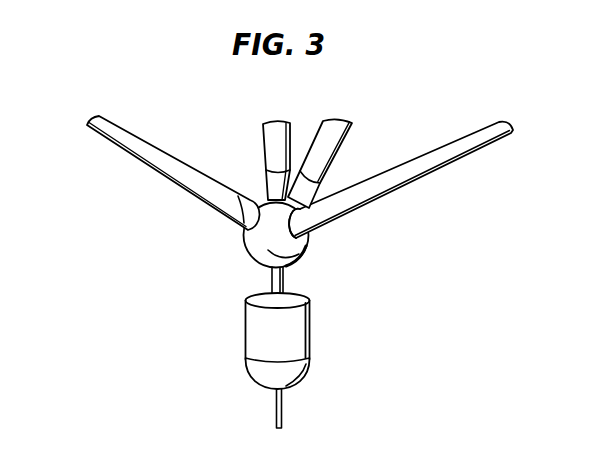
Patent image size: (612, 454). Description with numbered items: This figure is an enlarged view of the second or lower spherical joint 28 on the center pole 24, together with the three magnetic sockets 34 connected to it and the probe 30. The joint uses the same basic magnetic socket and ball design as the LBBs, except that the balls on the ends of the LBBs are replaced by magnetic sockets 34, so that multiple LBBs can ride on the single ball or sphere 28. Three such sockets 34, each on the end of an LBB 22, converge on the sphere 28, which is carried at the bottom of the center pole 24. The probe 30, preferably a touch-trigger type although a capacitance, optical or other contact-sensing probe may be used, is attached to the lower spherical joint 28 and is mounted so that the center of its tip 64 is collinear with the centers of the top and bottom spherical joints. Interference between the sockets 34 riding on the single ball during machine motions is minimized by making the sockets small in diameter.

The blade 22 is at (158, 152).
The center pole 24 is at (267, 150).
The lower spherical joint 28 is at (245, 252).
The probe 30 is at (311, 333).
The magnetic socket 34 is at (240, 222).
The tip 64 is at (283, 413).